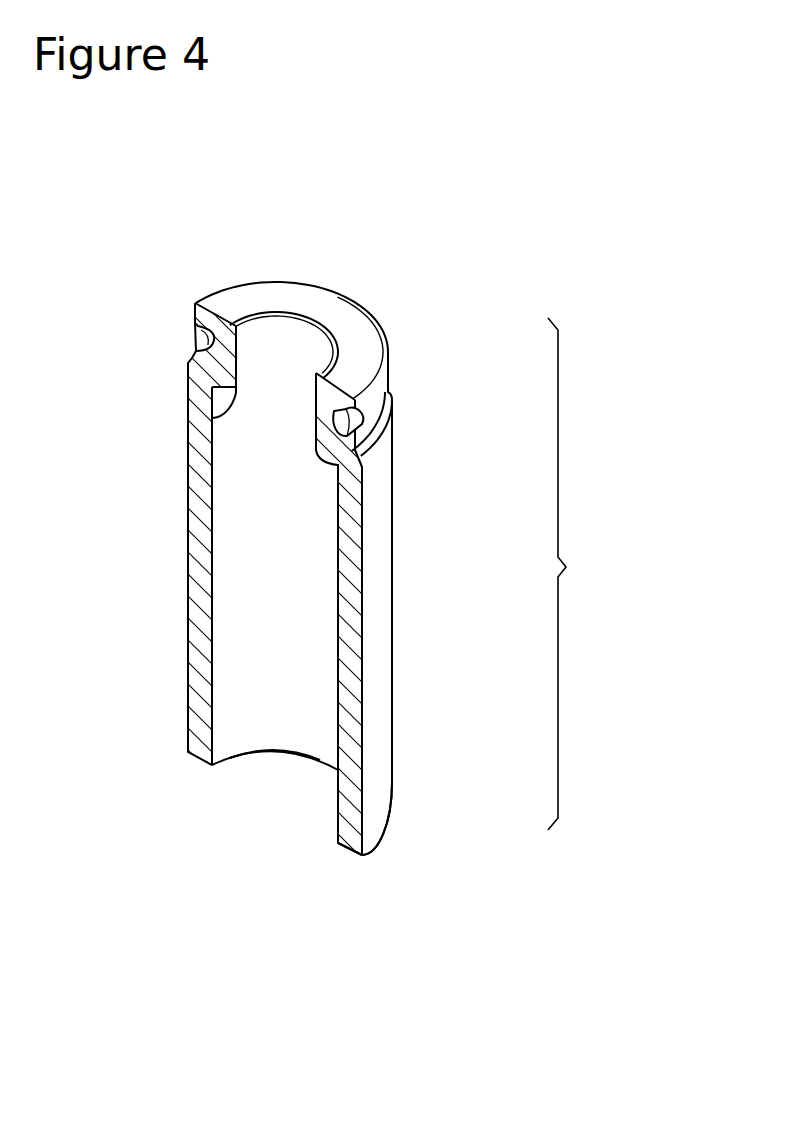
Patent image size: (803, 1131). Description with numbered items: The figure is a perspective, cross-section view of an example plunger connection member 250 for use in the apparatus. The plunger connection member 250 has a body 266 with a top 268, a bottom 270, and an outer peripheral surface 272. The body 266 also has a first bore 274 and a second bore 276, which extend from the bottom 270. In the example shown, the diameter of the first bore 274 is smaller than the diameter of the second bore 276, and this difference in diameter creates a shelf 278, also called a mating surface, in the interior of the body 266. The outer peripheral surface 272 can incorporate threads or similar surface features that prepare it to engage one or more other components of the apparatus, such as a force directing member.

The plunger connection member 250 is at (562, 253).
The body 266 is at (582, 574).
The top 268 is at (370, 268).
The bottom 270 is at (385, 873).
The outer peripheral surface 272 is at (377, 617).
The first bore 274 is at (271, 356).
The second bore 276 is at (280, 772).
The shelf 278 is at (213, 418).